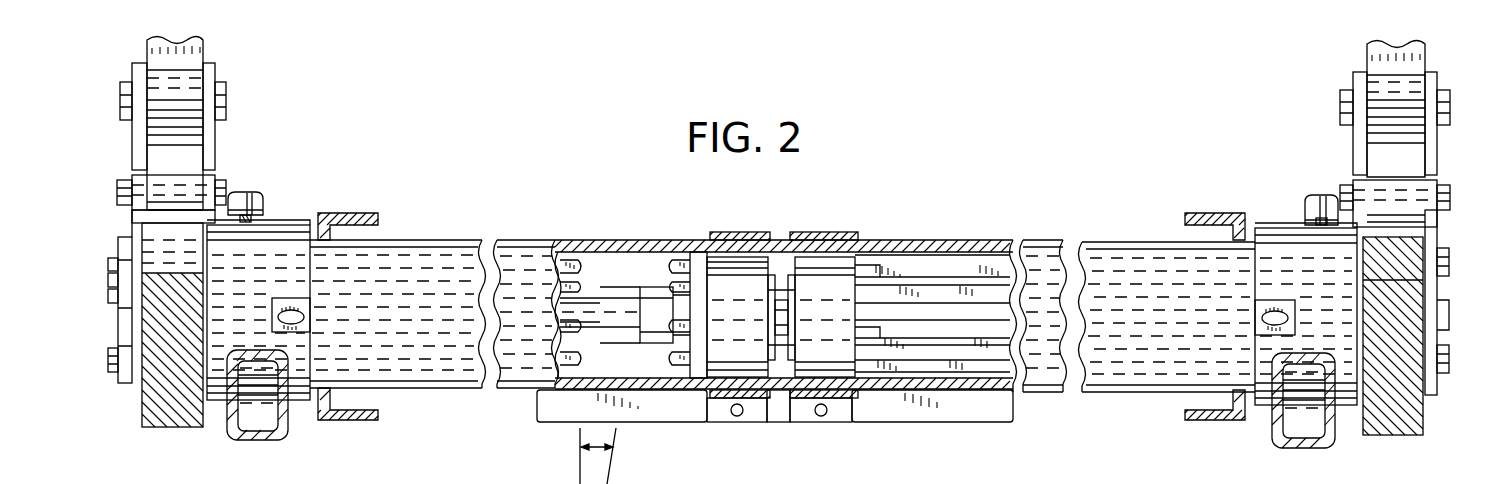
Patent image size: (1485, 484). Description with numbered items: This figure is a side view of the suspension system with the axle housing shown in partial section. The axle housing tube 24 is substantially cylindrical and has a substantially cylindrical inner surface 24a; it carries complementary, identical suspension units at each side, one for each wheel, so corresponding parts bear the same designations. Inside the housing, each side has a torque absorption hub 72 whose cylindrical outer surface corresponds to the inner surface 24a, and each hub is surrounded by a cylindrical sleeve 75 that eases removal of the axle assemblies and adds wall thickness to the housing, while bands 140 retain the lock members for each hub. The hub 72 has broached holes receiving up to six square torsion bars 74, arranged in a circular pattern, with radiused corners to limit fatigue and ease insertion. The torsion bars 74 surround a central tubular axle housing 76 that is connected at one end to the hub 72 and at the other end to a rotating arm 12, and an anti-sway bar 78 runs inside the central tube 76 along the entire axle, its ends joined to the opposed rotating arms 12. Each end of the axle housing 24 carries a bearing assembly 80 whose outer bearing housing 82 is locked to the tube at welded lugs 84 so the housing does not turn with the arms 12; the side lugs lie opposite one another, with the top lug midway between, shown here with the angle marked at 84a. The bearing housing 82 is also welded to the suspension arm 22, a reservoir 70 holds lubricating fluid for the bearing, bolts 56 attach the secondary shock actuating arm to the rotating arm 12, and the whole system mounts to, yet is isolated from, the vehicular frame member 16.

The rotating arm 12 is at (212, 140).
The vehicular frame member 16 is at (355, 420).
The suspension arm 22 is at (290, 483).
The axle housing tube 24 is at (432, 262).
The cylindrical inner surface 24a is at (590, 250).
The bolts 56 is at (108, 357).
The reservoir 70 is at (246, 194).
The torque absorption hub 72 is at (745, 314).
The torsion bars 74 is at (955, 290).
The cylindrical sleeve 75 is at (748, 258).
The central tubular axle housing 76 is at (650, 297).
The anti-sway bar 78 is at (612, 313).
The bearing assembly 80 is at (291, 216).
The bearing housing 82 is at (215, 395).
The welded lugs 84 is at (300, 325).
The angled face 84a is at (579, 481).
The bands 140 is at (720, 235).